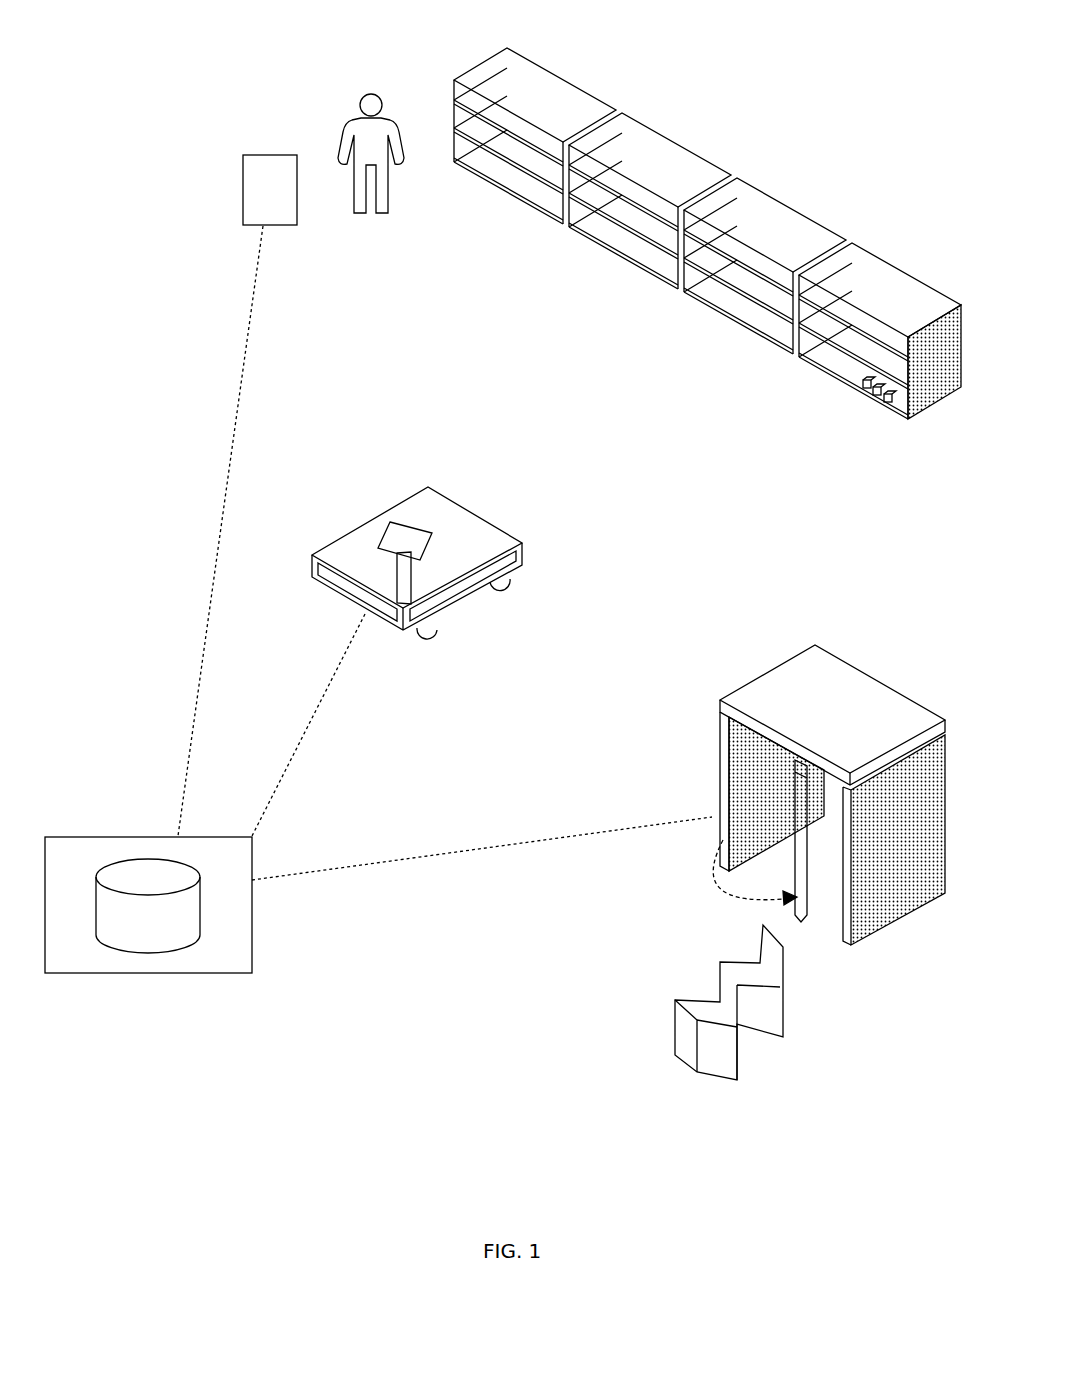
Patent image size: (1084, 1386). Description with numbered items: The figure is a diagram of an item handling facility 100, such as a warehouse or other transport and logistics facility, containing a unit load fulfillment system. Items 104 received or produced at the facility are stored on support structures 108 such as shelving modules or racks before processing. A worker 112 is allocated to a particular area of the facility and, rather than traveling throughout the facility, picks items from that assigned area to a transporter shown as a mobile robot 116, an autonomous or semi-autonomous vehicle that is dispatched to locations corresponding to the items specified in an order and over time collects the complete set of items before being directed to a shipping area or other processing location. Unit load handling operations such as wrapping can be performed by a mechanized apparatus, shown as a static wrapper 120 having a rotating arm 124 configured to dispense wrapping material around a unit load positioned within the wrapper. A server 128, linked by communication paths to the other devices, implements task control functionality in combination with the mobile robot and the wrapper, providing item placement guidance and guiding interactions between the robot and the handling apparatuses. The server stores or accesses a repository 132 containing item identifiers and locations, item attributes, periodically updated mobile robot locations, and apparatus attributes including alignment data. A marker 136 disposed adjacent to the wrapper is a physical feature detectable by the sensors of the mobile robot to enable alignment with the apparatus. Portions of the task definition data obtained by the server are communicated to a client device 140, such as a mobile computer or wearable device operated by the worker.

The item handling facility 100 is at (362, 1047).
The items 104 is at (890, 414).
The support structures 108 is at (803, 208).
The worker 112 is at (339, 142).
The mobile robot 116 is at (498, 508).
The wrapper 120 is at (800, 758).
The rotating arm 124 is at (797, 822).
The server 128 is at (148, 860).
The repository 132 is at (148, 906).
The marker 136 is at (693, 1072).
The client device 140 is at (243, 197).